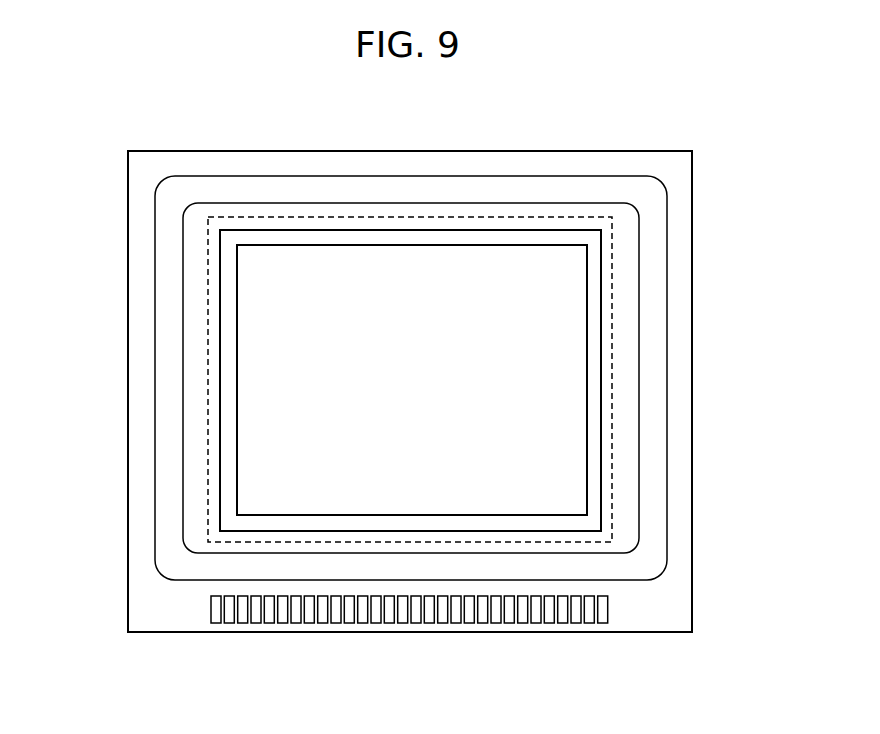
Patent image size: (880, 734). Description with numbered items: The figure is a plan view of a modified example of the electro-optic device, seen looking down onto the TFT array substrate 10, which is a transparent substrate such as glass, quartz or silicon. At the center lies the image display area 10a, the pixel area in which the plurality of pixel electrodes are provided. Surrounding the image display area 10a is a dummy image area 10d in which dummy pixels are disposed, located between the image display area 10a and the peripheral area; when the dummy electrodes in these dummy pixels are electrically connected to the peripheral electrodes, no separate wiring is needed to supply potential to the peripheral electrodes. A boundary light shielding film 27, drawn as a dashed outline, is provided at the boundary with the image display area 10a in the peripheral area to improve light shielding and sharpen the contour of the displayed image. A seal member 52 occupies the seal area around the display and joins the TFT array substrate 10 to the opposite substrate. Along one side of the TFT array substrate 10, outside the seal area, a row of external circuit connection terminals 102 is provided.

The TFT array substrate 10 is at (657, 157).
The image display area 10a is at (260, 358).
The dummy image area 10d is at (595, 318).
The boundary light shielding film 27 is at (527, 217).
The seal member 52 is at (657, 482).
The external circuit connection terminal 102 is at (575, 618).